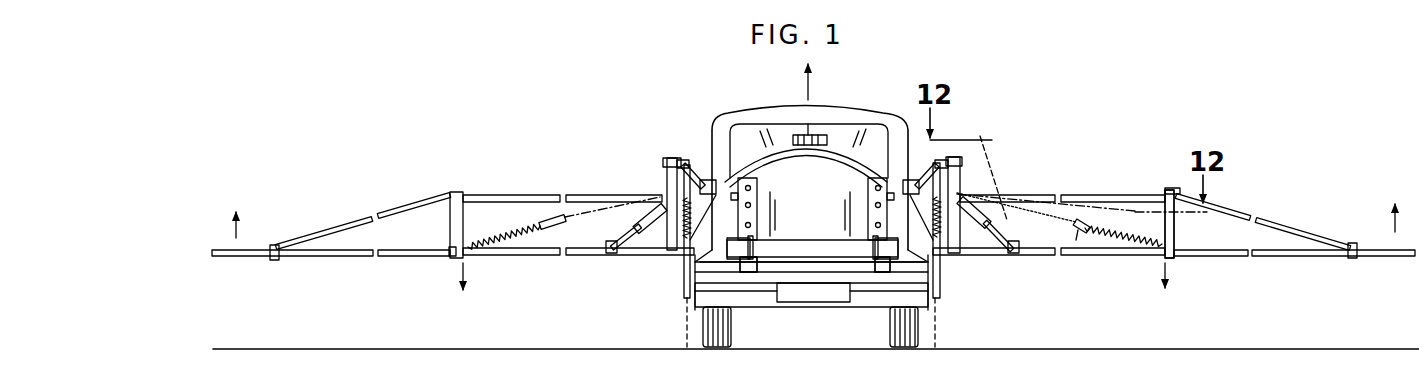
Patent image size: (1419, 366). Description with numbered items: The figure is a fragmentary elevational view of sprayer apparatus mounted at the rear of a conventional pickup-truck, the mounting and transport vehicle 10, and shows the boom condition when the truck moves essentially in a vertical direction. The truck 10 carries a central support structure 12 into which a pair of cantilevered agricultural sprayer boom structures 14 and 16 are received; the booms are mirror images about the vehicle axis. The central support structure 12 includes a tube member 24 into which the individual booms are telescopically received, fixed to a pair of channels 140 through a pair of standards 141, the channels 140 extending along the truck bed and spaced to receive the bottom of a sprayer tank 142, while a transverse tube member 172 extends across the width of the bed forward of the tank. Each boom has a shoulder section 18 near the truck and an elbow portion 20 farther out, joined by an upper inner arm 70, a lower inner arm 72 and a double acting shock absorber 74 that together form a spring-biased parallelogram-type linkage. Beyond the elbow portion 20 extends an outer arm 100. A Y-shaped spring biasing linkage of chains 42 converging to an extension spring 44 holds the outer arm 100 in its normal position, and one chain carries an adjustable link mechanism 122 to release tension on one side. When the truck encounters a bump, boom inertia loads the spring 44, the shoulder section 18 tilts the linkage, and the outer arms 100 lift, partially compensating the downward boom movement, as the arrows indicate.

The mounting and transport vehicle 10 is at (756, 104).
The central support structure 12 is at (812, 264).
The sprayer boom structure 14 is at (813, 217).
The sprayer boom structure 16 is at (1133, 169).
The shoulder section 18 is at (666, 157).
The elbow portion 20 is at (444, 264).
The tube member 24 is at (831, 252).
The chains 42 is at (598, 215).
The extension spring 44 is at (516, 237).
The upper inner arm 70 is at (545, 196).
The lower inner arm 72 is at (555, 256).
The double acting shock absorber 74 is at (636, 232).
The outer arm 100 is at (353, 219).
The adjustable link mechanism 122 is at (553, 217).
The channels 140 is at (748, 272).
The standards 141 is at (752, 200).
The sprayer tank 142 is at (836, 168).
The tube member 172 is at (705, 182).